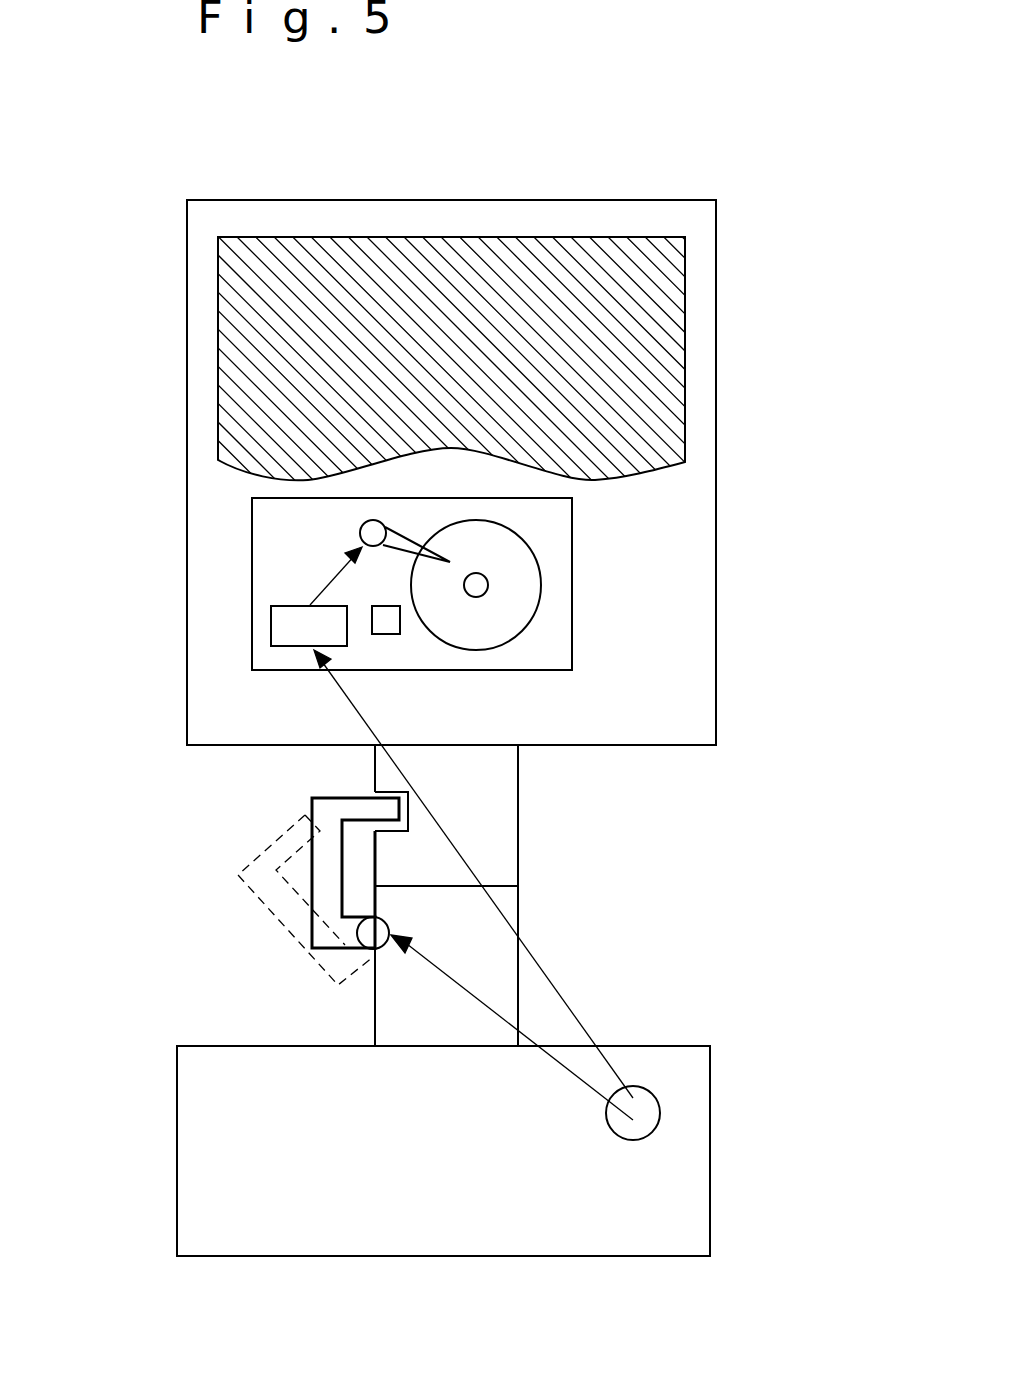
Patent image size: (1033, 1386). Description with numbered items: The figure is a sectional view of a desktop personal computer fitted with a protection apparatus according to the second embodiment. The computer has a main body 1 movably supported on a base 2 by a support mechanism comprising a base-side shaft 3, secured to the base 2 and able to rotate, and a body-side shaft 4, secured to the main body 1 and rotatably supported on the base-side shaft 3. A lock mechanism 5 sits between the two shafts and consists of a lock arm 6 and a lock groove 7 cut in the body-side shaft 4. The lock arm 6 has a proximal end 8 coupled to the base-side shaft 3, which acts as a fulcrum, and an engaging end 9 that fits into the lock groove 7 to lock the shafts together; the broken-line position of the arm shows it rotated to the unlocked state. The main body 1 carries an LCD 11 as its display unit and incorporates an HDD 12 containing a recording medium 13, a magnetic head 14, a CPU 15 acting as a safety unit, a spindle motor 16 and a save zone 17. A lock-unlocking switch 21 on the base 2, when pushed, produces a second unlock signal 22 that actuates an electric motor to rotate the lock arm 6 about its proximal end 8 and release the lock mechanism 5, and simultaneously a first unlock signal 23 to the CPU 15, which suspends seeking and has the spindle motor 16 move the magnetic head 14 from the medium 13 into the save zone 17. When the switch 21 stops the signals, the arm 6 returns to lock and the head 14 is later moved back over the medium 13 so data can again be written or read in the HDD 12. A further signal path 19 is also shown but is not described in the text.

The main body 1 is at (187, 309).
The base 2 is at (177, 1157).
The base-side shaft 3 is at (507, 907).
The body-side shaft 4 is at (507, 818).
The lock mechanism 5 is at (293, 968).
The lock arm 6 is at (324, 881).
The lock groove 7 is at (407, 810).
The proximal end 8 is at (373, 935).
The engaging end 9 is at (383, 810).
The LCD 11 is at (530, 260).
The HDD 12 is at (572, 608).
The recording medium 13 is at (520, 562).
The magnetic head 14 is at (402, 540).
The CPU 15 is at (271, 628).
The spindle motor 16 is at (372, 532).
The save zone 17 is at (387, 635).
The signal path 19 is at (332, 582).
The lock-unlocking switch 21 is at (660, 1110).
The second unlock signal 22 is at (486, 1008).
The first unlock signal 23 is at (558, 992).